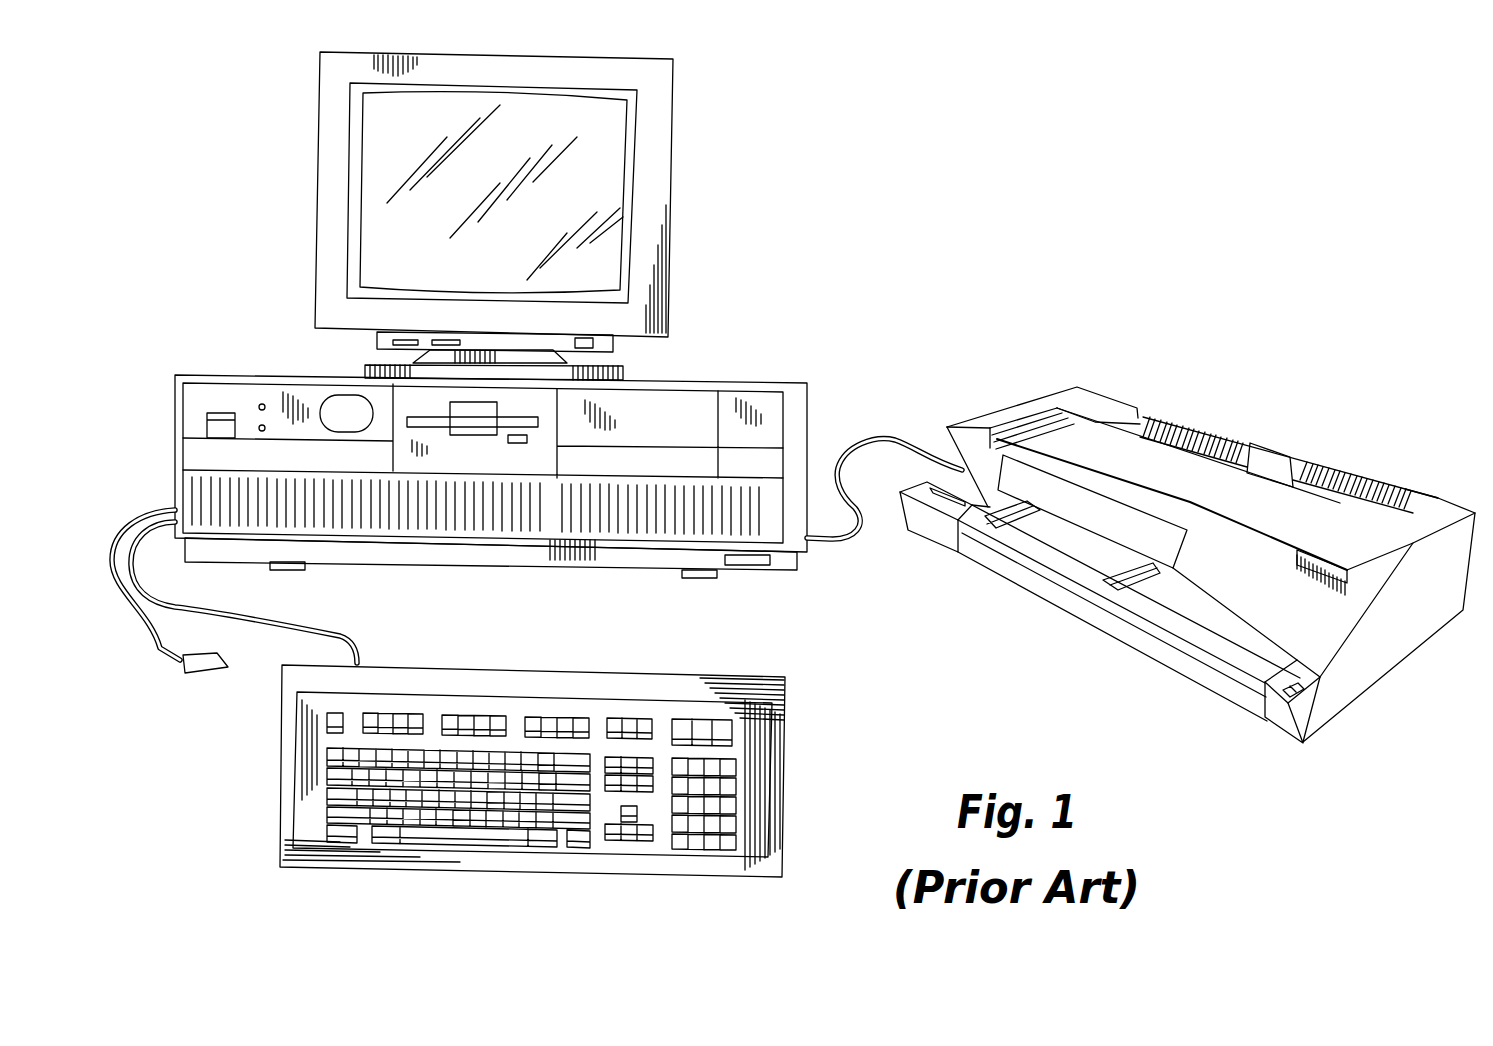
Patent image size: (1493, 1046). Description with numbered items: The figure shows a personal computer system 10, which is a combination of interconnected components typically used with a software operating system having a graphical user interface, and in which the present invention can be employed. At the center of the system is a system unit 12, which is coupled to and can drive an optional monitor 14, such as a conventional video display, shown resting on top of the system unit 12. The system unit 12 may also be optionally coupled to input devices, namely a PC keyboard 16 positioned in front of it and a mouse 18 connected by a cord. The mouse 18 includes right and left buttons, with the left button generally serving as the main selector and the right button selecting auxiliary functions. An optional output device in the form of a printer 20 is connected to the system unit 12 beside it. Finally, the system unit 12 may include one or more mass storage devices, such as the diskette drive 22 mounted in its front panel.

The personal computer system 10 is at (893, 313).
The system unit 12 is at (491, 449).
The monitor 14 is at (672, 186).
The PC keyboard 16 is at (580, 665).
The mouse 18 is at (218, 673).
The printer 20 is at (992, 408).
The diskette drive 22 is at (430, 414).